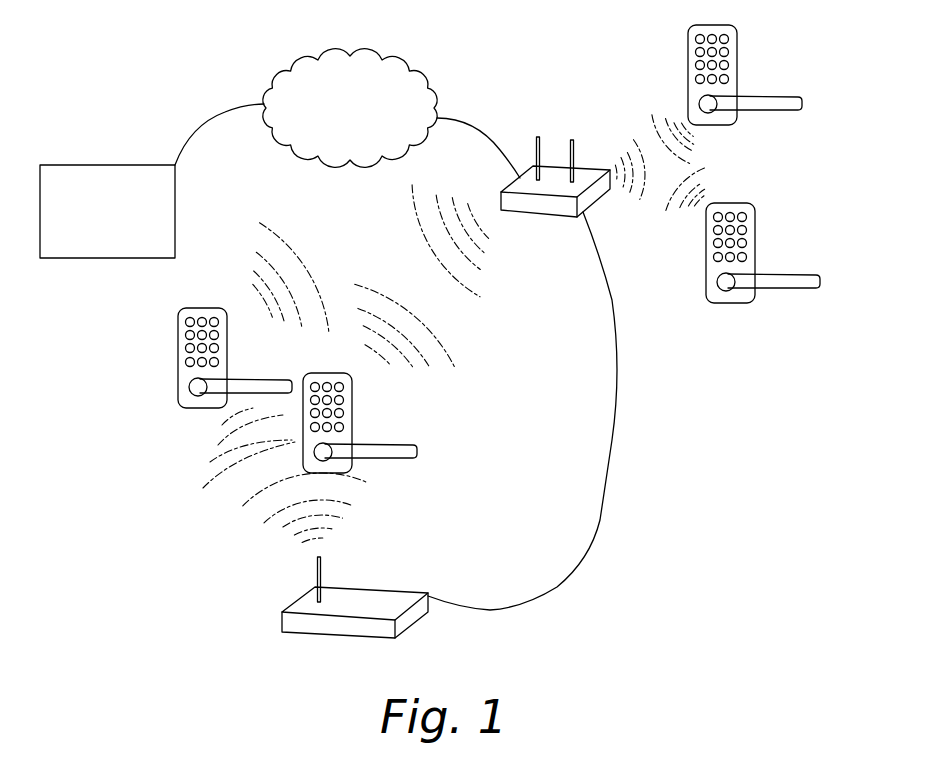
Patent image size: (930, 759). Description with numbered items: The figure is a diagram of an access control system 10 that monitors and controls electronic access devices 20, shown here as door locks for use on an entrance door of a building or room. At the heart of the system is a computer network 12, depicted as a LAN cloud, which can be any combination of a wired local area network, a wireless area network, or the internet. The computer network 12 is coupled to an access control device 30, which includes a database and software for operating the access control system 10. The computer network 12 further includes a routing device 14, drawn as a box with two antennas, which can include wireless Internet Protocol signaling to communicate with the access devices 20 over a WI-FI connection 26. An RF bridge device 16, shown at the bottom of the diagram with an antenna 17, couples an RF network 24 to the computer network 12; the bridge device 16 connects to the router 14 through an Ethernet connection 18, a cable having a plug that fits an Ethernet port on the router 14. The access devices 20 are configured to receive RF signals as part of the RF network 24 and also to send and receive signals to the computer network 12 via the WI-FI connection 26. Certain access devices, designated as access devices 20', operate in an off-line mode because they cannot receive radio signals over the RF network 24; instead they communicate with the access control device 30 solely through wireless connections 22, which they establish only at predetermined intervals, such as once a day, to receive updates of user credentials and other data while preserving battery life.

The access control system 10 is at (120, 82).
The computer network 12 is at (281, 72).
The routing device 14 is at (553, 158).
The RF bridge device 16 is at (406, 629).
The antenna 17 is at (317, 567).
The Ethernet connection 18 is at (607, 465).
The access devices 20 is at (264, 390).
The off-line access devices 20' is at (760, 164).
The wireless connections 22 is at (640, 122).
The RF network 24 is at (380, 503).
The WI-FI connection 26 is at (372, 245).
The access control device 30 is at (119, 222).